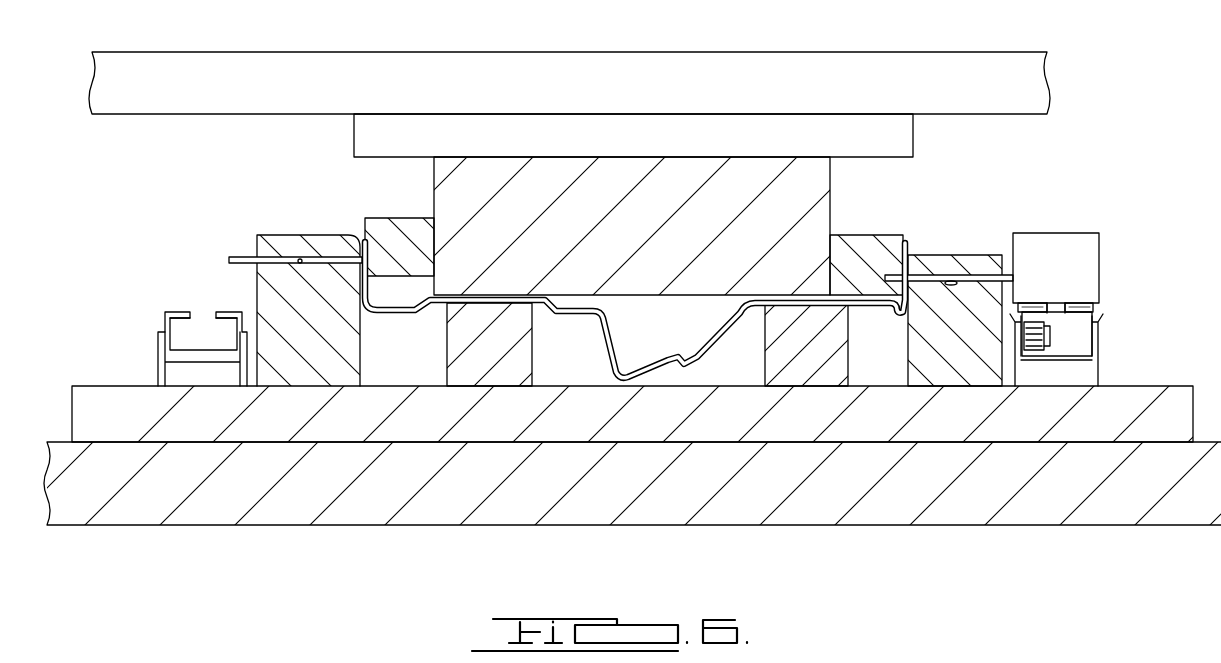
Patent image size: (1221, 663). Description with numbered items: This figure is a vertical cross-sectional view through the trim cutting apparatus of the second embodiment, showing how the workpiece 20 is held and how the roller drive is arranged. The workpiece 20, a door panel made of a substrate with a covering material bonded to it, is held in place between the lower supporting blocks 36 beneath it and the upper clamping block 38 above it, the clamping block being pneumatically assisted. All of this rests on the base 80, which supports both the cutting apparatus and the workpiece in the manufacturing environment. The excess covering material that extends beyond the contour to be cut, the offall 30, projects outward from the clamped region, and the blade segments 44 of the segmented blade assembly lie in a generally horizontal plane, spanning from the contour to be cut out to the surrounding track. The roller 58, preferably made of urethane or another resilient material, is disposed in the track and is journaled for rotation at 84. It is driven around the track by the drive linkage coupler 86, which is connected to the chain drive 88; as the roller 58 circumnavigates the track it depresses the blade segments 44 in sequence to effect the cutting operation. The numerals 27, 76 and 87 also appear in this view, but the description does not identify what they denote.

The workpiece 20 is at (635, 336).
The flange portion of workpiece 27 is at (372, 295).
The excess portion or offall 30 is at (370, 250).
The lower supporting blocks 36 is at (510, 353).
The upper clamping block 38 is at (660, 224).
The blade segments 44 is at (240, 256).
The roller 58 is at (1052, 240).
The bend radius of workpiece 76 is at (384, 320).
The base 80 is at (368, 511).
The journal 84 is at (1058, 303).
The drive linkage coupler 86 is at (1078, 338).
The channel member 87 is at (163, 318).
The chain drive 88 is at (1041, 351).